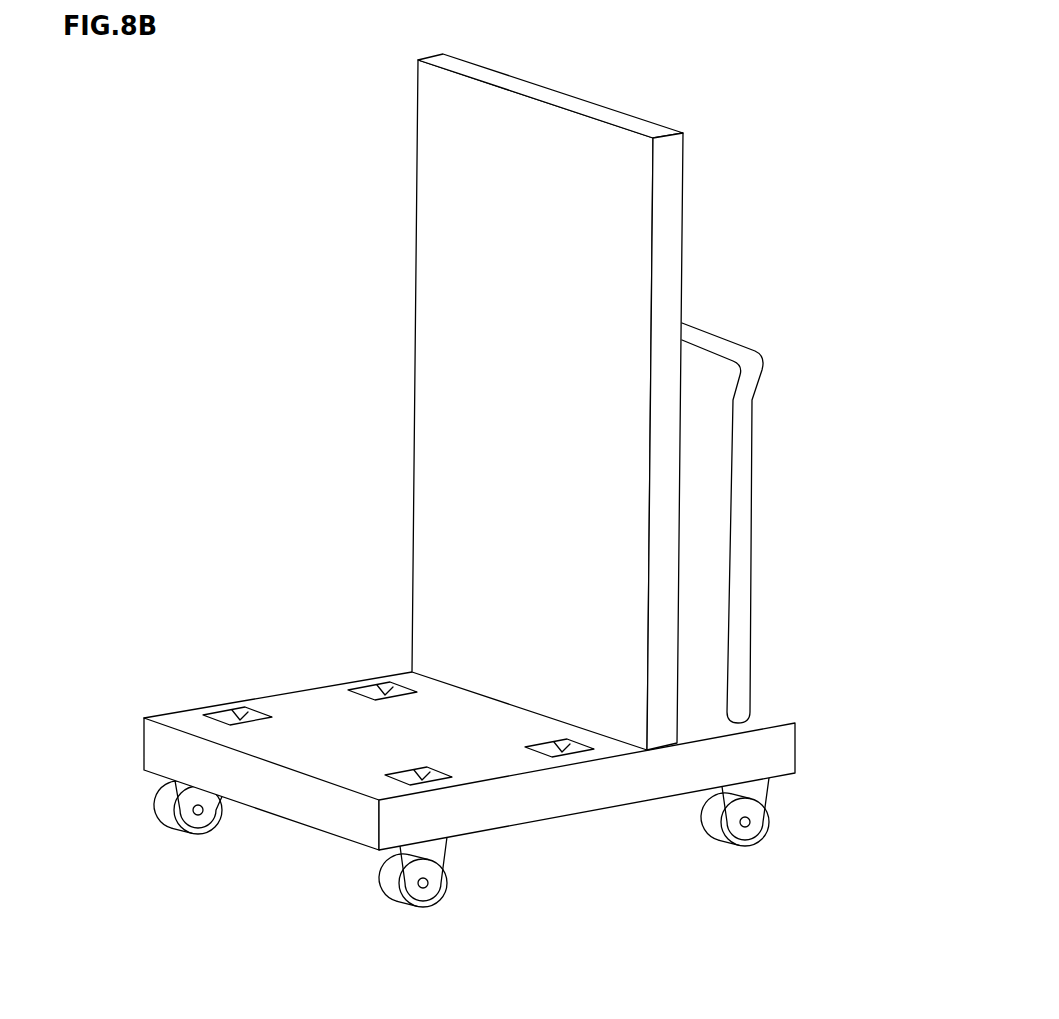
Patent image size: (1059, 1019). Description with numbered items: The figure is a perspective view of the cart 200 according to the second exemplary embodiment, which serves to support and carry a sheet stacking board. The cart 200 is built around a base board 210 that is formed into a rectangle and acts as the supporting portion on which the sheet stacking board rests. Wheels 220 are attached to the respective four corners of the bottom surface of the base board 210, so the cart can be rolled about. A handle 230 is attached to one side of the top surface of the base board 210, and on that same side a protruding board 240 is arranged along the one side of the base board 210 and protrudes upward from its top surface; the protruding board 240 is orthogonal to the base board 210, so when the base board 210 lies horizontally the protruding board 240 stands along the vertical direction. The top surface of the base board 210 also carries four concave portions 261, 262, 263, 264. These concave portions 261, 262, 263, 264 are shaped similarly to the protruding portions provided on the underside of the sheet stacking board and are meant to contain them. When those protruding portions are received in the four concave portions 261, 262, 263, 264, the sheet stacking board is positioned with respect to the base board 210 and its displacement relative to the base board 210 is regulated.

The cart 200 is at (808, 80).
The base board 210 is at (265, 788).
The wheels 220 is at (157, 810).
The handle 230 is at (715, 330).
The protruding board 240 is at (570, 102).
The concave portion 261 is at (423, 780).
The concave portion 262 is at (565, 752).
The concave portion 263 is at (242, 713).
The concave portion 264 is at (383, 693).